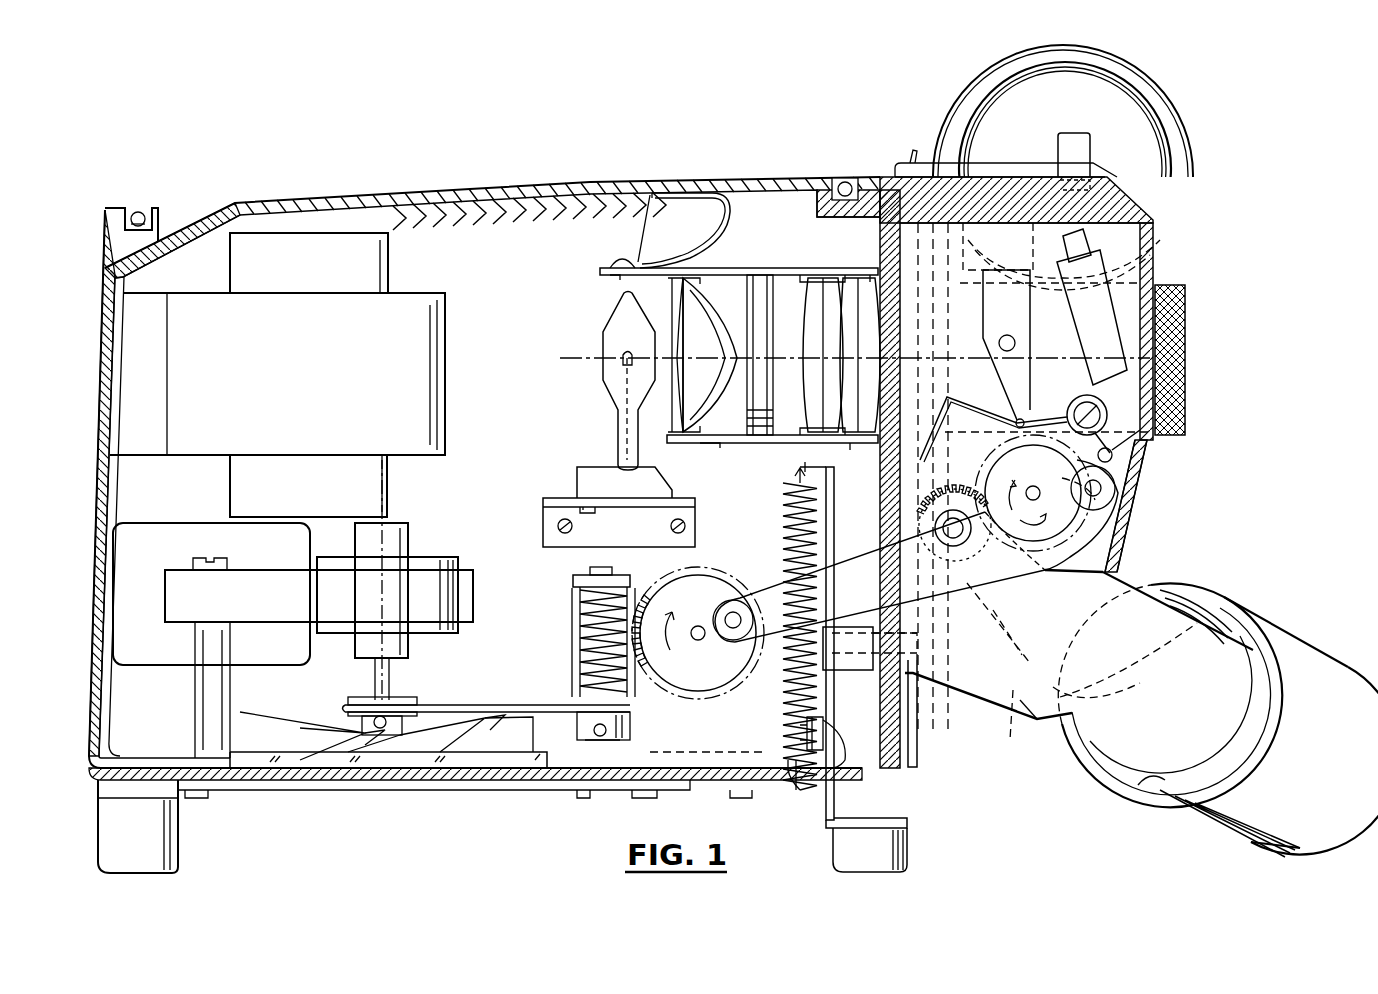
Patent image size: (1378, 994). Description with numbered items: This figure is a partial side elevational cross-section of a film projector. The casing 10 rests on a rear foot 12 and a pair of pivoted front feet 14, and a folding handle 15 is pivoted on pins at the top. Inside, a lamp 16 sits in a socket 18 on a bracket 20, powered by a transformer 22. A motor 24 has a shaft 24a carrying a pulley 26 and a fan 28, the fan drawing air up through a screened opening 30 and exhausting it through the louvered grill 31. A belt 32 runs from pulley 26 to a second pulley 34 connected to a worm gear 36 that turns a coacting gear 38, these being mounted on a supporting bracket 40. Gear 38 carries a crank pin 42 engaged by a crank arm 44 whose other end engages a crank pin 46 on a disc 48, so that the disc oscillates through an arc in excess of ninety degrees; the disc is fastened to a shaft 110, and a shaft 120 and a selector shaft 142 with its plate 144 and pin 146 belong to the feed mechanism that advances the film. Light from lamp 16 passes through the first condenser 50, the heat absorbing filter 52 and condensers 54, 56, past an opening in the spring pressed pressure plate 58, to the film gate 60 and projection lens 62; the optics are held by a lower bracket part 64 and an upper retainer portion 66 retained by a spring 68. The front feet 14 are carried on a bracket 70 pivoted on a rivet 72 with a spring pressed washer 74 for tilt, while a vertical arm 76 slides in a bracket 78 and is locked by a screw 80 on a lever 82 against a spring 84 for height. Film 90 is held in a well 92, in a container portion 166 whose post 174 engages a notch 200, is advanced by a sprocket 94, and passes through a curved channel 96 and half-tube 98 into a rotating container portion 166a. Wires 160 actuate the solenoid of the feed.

The casing 10 is at (276, 198).
The rear foot 12 is at (170, 835).
The front feet 14 is at (895, 848).
The folding handle 15 is at (140, 210).
The lamp 16 is at (612, 386).
The socket 18 is at (588, 478).
The bracket 20 is at (548, 534).
The transformer 22 is at (420, 362).
The motor 24 is at (140, 537).
The motor shaft 24a is at (372, 680).
The pulley 26 is at (398, 698).
The fan 28 is at (500, 750).
The screened opening 30 is at (545, 790).
The louvered grill 31 is at (485, 190).
The belt 32 is at (450, 705).
The second pulley 34 is at (578, 705).
The worm gear 36 is at (578, 633).
The gear 38 is at (698, 578).
The supporting bracket 40 is at (675, 752).
The crank pin 42 is at (735, 612).
The crank arm 44 is at (848, 590).
The crank pin 46 is at (1100, 492).
The disc 48 is at (1060, 455).
The first condenser 50 is at (676, 310).
The heat absorbing filter 52 is at (760, 290).
The condenser 54 is at (805, 310).
The condenser 56 is at (860, 310).
The pressure plate 58 is at (905, 158).
The film gate 60 is at (942, 410).
The projection lens 62 is at (1185, 300).
The lower bracket part 64 is at (780, 443).
The upper retainer portion 66 is at (770, 282).
The spring 68 is at (740, 192).
The bracket 70 is at (828, 815).
The rivet 72 is at (842, 742).
The spring pressed washer 74 is at (812, 770).
The vertical arm 76 is at (836, 535).
The bracket 78 is at (830, 655).
The screw 80 is at (925, 700).
The lever 82 is at (917, 760).
The spring 84 is at (778, 718).
The film 90 is at (968, 87).
The well 92 is at (1120, 285).
The sprocket 94 is at (958, 545).
The channel 96 is at (1012, 728).
The half-tube 98 is at (1148, 780).
The shaft 110 is at (1048, 490).
The shaft 120 is at (975, 560).
The selector shaft 142 is at (1022, 340).
The plate 144 is at (905, 290).
The pin 146 is at (1030, 415).
The wires 160 is at (1186, 338).
The container portion 166 is at (1186, 90).
The container portion 166a is at (1270, 645).
The post 174 is at (1090, 148).
The notch 200 is at (1052, 168).